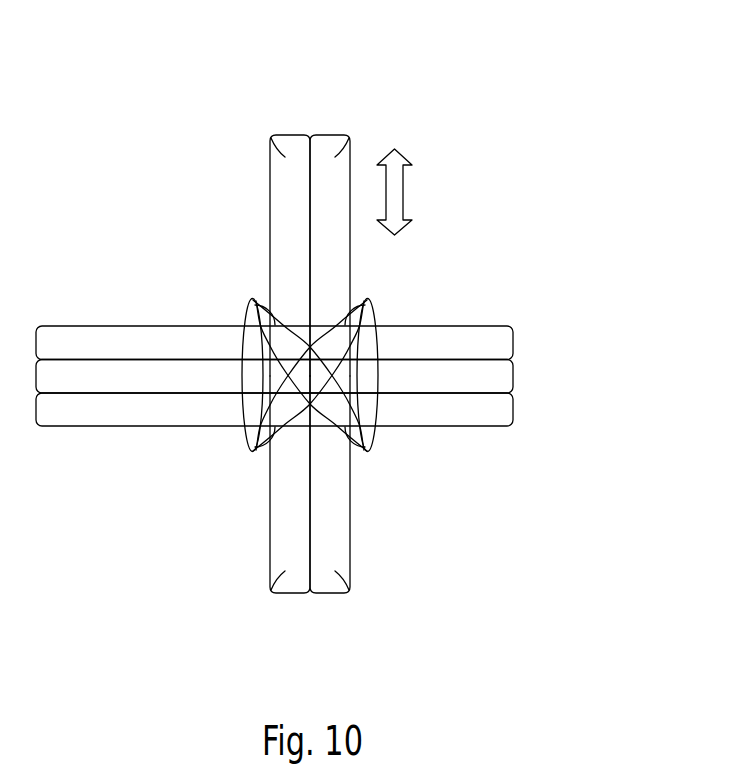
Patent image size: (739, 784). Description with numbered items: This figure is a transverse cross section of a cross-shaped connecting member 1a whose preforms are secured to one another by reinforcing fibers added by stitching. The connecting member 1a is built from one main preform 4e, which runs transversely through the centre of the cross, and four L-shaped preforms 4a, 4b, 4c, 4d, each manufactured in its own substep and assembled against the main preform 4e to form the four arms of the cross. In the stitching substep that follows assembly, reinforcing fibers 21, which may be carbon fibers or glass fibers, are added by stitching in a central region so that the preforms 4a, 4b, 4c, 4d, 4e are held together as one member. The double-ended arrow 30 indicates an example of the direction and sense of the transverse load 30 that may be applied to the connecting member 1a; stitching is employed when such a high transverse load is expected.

The cross-shaped connecting member 1a is at (524, 257).
The L-shaped preform 4a is at (270, 136).
The L-shaped preform 4b is at (350, 136).
The L-shaped preform 4c is at (273, 594).
The L-shaped preform 4d is at (347, 594).
The main preform 4e is at (488, 380).
The reinforcing fibers 21 is at (248, 447).
The transverse load 30 is at (403, 175).